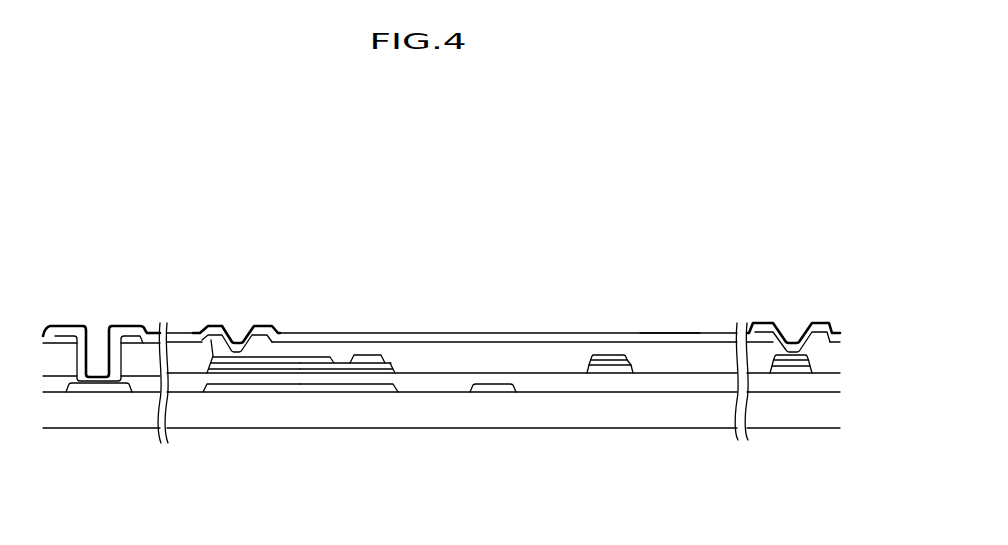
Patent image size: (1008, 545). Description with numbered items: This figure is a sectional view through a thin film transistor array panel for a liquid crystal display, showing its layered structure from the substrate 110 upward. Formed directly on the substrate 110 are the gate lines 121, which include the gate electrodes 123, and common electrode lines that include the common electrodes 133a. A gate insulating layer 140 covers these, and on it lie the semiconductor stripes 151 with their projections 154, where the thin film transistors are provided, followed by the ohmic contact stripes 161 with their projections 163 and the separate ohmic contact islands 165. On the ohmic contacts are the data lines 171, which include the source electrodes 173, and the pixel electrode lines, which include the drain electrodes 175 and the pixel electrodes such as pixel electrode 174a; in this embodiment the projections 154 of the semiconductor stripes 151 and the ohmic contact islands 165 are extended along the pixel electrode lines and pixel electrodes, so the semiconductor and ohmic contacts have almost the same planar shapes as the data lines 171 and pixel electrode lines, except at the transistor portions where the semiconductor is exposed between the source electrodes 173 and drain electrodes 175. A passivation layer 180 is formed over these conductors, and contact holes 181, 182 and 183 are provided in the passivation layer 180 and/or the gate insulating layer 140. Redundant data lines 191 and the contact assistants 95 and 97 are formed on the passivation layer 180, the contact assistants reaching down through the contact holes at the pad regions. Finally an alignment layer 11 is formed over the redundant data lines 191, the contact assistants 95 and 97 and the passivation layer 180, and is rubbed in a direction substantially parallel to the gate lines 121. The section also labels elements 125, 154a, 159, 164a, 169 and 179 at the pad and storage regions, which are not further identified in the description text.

The alignment layer 11 is at (650, 333).
The contact assistant 95 is at (68, 326).
The contact assistant 97 is at (770, 332).
The substrate 110 is at (405, 428).
The gate line 121 is at (247, 388).
The gate electrode 123 is at (302, 388).
The gate pad 125 is at (88, 388).
The common electrode 133a is at (485, 388).
The gate insulating layer 140 is at (575, 385).
The semiconductor stripe 151 is at (213, 368).
The projection 154 is at (368, 373).
The semiconductor island 154a is at (610, 372).
The semiconductor island of data pad 159 is at (777, 372).
The ohmic contact stripe 161 is at (276, 365).
The projection 163 is at (300, 363).
The ohmic contact island 164a is at (622, 363).
The ohmic contact island 165 is at (390, 365).
The ohmic contact of data pad 169 is at (802, 363).
The data line 171 is at (195, 331).
The source electrode 173 is at (330, 358).
The pixel electrode 174a is at (617, 355).
The drain electrode 175 is at (356, 357).
The data pad 179 is at (808, 345).
The passivation layer 180 is at (552, 342).
The contact hole 181 is at (97, 363).
The contact hole 182 is at (792, 329).
The contact hole 183 is at (235, 325).
The redundant data line 191 is at (212, 324).